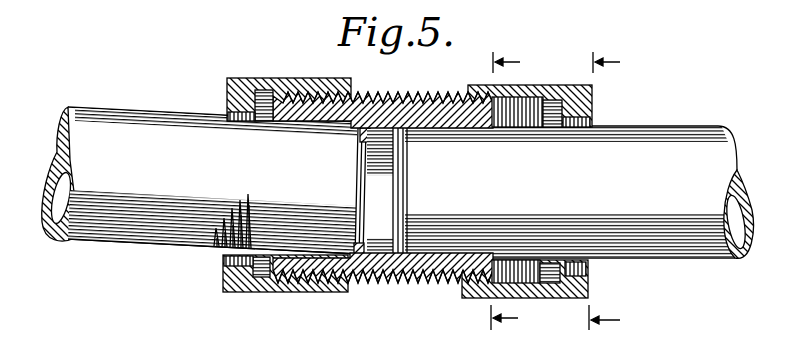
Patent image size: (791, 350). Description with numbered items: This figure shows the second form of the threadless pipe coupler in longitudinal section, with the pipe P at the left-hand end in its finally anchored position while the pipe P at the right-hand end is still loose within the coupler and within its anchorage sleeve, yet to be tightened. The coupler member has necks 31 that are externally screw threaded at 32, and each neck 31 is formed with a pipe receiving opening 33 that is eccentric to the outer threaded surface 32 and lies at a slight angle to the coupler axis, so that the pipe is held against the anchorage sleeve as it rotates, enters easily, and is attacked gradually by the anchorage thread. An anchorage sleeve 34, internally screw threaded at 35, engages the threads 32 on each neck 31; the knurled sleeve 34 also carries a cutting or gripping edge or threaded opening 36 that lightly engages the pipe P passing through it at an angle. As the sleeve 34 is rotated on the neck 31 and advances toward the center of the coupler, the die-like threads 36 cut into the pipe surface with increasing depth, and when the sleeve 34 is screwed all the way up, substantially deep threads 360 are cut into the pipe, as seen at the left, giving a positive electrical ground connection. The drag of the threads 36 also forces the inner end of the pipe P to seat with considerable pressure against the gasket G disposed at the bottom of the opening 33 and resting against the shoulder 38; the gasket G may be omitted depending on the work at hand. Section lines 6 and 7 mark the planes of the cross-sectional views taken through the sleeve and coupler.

The neck 31 is at (318, 93).
The external screw threads 32 is at (420, 130).
The pipe receiving opening 33 is at (280, 127).
The anchorage sleeve 34 is at (338, 88).
The internal screw threads 35 is at (496, 90).
The cutting or gripping edge 36 is at (246, 120).
The shoulder 38 is at (384, 94).
The threads cut into the pipe 360 is at (215, 233).
The gasket G is at (402, 212).
The pipe P is at (676, 136).
The section line 6- 6 is at (496, 191).
The section line 7- 7 is at (596, 191).